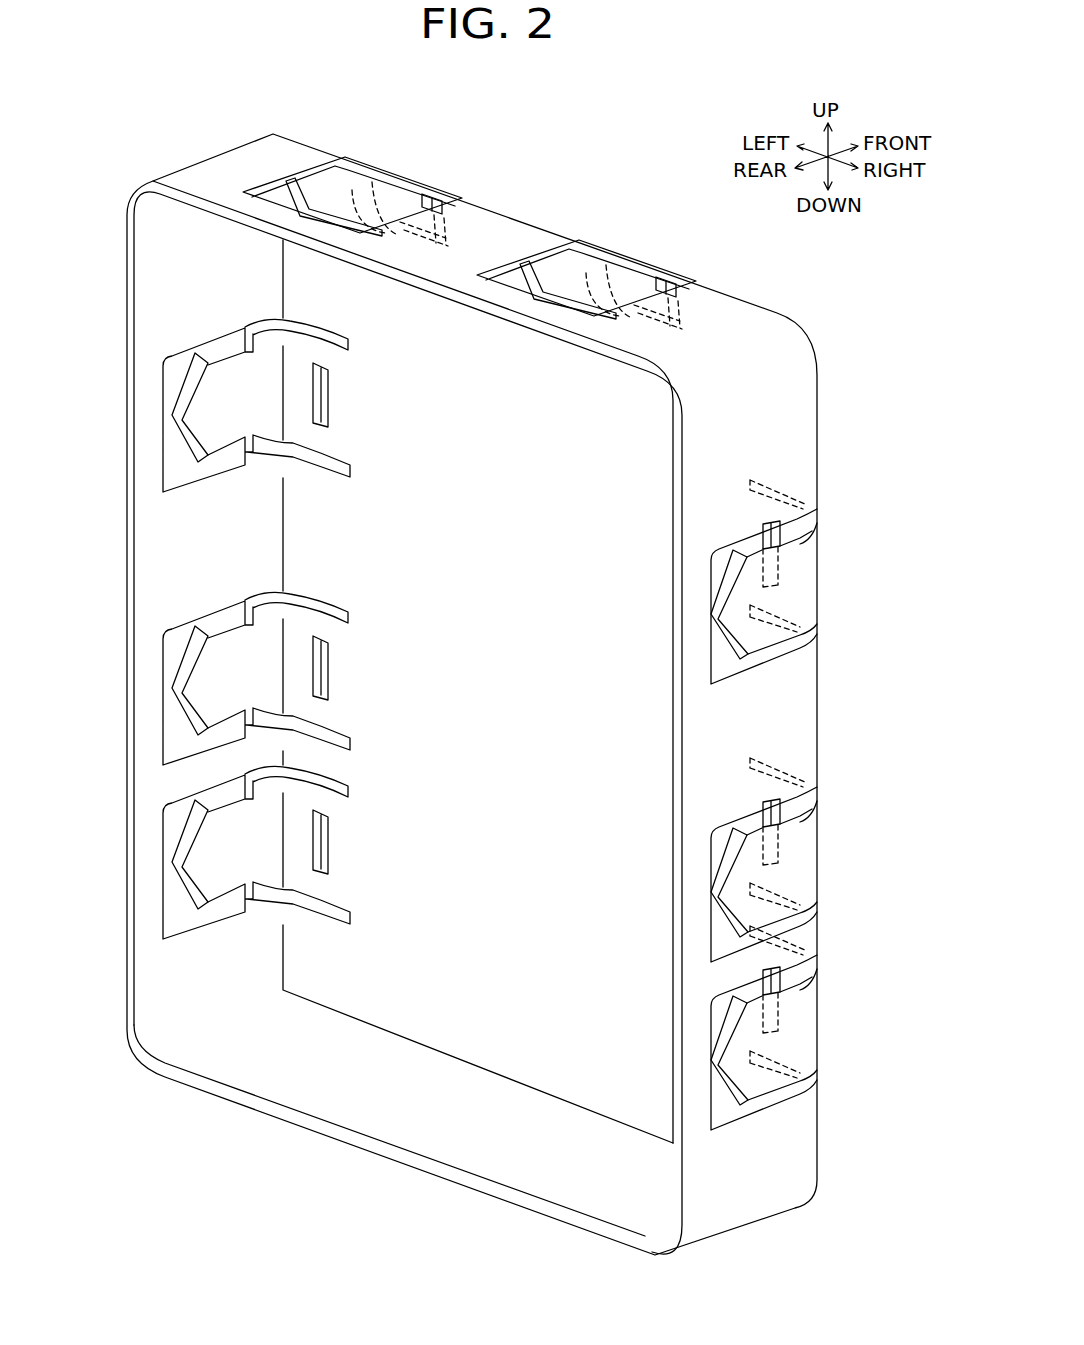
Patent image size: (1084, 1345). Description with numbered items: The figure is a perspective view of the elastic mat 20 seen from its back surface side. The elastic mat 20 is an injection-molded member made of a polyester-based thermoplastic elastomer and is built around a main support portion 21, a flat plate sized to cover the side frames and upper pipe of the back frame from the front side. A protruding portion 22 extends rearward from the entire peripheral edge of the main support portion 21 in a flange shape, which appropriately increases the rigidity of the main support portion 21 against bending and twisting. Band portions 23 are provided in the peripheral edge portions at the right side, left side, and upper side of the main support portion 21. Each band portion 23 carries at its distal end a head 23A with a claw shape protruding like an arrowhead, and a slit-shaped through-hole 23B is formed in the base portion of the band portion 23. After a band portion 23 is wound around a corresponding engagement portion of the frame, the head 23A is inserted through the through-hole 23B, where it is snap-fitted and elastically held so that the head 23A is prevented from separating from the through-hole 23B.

The elastic mat 20 is at (551, 198).
The main support portion 21 is at (540, 470).
The protruding portion 22 is at (182, 227).
The band portion 23 is at (476, 611).
The head 23A is at (404, 641).
The through-hole 23B is at (602, 563).